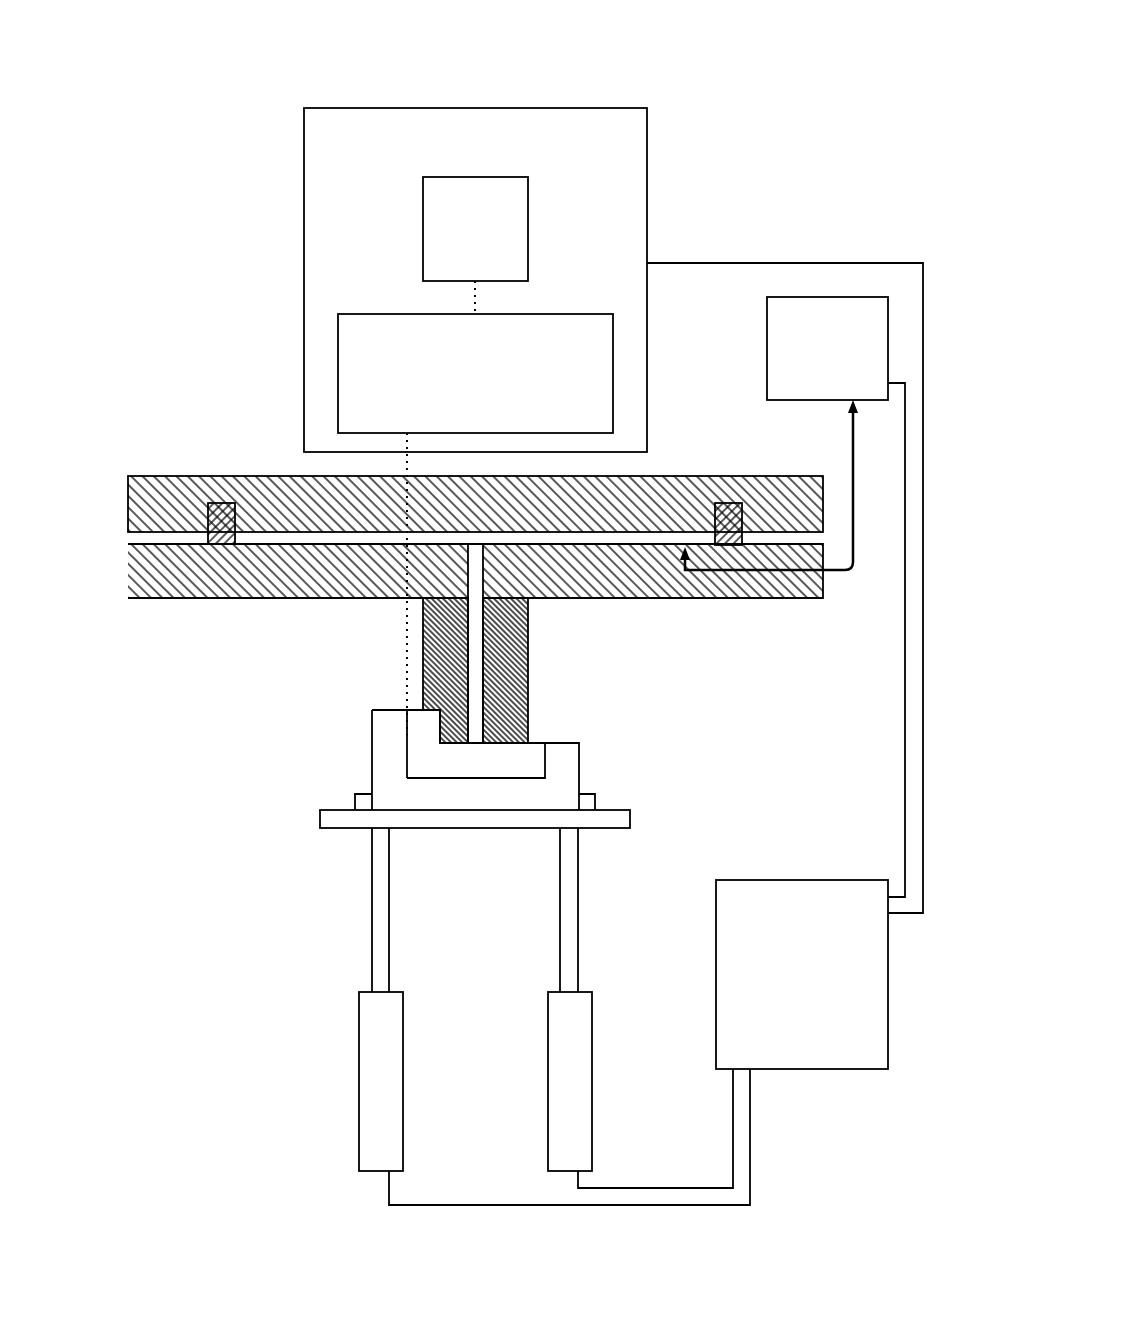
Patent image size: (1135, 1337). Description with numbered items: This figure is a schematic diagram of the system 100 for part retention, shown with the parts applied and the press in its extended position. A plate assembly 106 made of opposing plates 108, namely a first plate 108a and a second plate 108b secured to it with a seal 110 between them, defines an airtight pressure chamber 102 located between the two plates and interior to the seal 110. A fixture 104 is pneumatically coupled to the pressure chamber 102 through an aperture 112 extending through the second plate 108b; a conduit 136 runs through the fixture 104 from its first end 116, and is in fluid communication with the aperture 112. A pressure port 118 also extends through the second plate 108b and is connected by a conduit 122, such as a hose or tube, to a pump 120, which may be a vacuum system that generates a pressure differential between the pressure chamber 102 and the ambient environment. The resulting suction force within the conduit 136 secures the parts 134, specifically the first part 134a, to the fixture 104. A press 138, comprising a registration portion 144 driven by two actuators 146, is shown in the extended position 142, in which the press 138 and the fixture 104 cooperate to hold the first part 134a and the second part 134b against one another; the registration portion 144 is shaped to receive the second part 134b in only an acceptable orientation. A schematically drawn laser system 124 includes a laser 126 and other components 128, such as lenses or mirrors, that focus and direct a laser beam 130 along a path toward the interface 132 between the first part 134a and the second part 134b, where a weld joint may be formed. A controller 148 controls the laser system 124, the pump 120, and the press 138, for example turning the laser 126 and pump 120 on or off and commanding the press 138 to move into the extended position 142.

The system for part retention 100 is at (716, 49).
The pressure chamber 102 is at (642, 560).
The fixture 104 is at (445, 704).
The plate assembly 106 is at (147, 448).
The plates 108 is at (475, 549).
The first plate 108a is at (305, 485).
The second plate 108b is at (347, 587).
The seal 110 is at (223, 530).
The aperture 112 is at (497, 574).
The first end of the fixture 116 is at (436, 584).
The pressure port 118 is at (783, 572).
The pump 120 is at (846, 372).
The conduit 122 is at (850, 460).
The laser system 124 is at (565, 156).
The laser 126 is at (494, 254).
The other components 128 is at (554, 401).
The laser beam 130 is at (475, 298).
The interface 132 is at (398, 700).
The parts 134 is at (398, 744).
The first part 134a is at (422, 725).
The second part 134b is at (390, 780).
The conduit 136 is at (497, 622).
The press 138 is at (556, 810).
The extended position 142 is at (676, 813).
The registration portion 144 is at (598, 776).
The actuators 146 is at (372, 1068).
The controller 148 is at (821, 999).